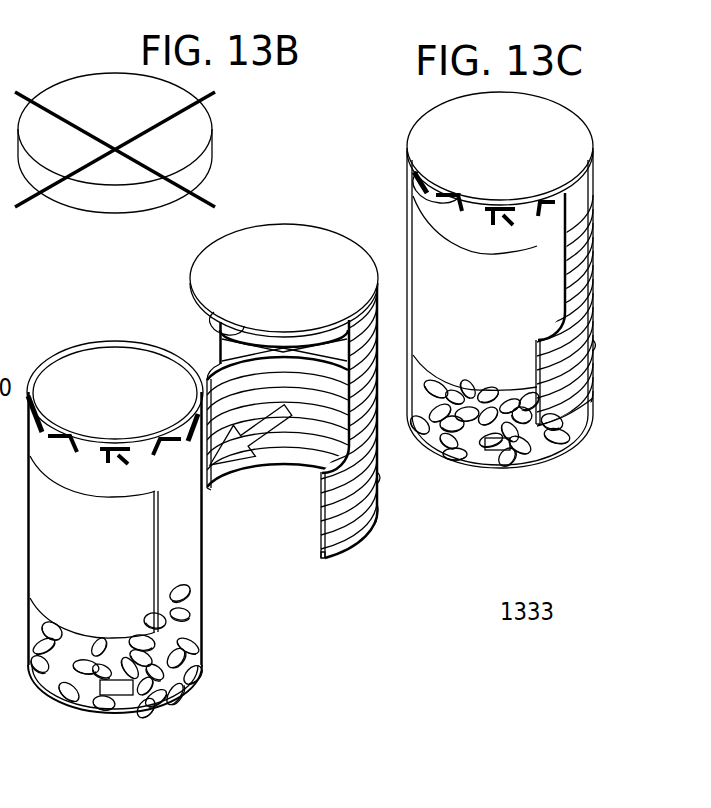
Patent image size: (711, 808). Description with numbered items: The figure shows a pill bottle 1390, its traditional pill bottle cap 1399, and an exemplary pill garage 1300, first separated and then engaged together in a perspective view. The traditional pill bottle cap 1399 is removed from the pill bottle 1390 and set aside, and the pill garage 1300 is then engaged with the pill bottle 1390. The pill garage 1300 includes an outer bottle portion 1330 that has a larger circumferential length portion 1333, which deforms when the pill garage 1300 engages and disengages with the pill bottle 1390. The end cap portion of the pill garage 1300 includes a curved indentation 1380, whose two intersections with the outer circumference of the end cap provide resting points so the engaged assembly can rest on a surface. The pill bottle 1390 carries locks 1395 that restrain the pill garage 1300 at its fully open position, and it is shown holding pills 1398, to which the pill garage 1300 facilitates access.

In FIG. 13B, the traditional pill bottle cap 1399 is at (211, 150).
In FIG. 13B, the pill garage 1300 is at (345, 200).
In FIG. 13C, the pill garage 1300 is at (411, 115).
In FIG. 13B, the indentation 1380 is at (238, 318).
In FIG. 13C, the indentation 1380 is at (454, 189).
In FIG. 13B, the outer bottle portion 1330 is at (376, 519).
In FIG. 13C, the outer bottle portion 1330 is at (570, 376).
In FIG. 13B, the larger circumferential length portion 1333 is at (316, 553).
In FIG. 13C, the larger circumferential length portion 1333 is at (516, 432).
In FIG. 13B, the pill bottle 1390 is at (203, 672).
In FIG. 13C, the pill bottle 1390 is at (565, 452).
In FIG. 13B, the locks 1395 is at (160, 460).
In FIG. 13B, the pills 1398 is at (130, 697).